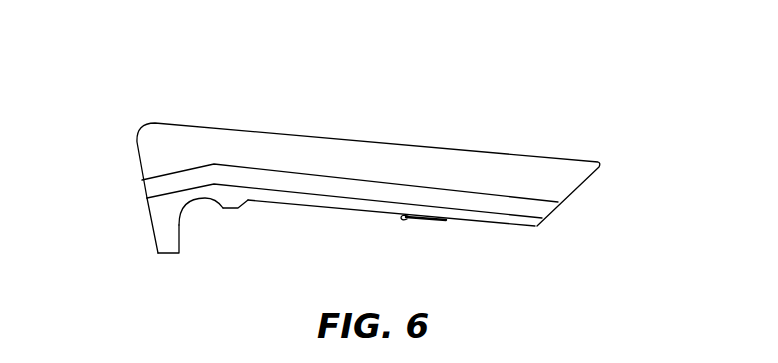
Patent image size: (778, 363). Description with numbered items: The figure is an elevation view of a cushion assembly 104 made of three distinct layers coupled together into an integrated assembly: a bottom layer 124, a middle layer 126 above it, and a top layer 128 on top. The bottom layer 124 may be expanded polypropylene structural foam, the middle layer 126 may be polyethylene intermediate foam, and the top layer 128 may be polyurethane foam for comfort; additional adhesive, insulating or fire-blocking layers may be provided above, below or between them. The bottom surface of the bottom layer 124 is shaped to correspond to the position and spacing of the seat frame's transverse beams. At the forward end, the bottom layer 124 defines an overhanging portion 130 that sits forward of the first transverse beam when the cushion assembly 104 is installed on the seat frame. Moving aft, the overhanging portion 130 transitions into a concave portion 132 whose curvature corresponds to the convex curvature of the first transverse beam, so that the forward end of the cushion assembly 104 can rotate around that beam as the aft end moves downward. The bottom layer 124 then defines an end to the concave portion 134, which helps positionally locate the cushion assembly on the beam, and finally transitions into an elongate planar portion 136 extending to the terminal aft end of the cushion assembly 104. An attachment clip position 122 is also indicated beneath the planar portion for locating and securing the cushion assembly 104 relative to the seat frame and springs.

The cushion assembly 104 is at (143, 132).
The adhesive film strip 122 is at (410, 218).
The bottom layer 124 is at (170, 229).
The middle layer 126 is at (160, 188).
The top layer 128 is at (163, 159).
The overhanging portion 130 is at (172, 246).
The concave portion 132 is at (193, 205).
The end to the concave portion 134 is at (239, 208).
The elongate planar portion 136 is at (470, 218).